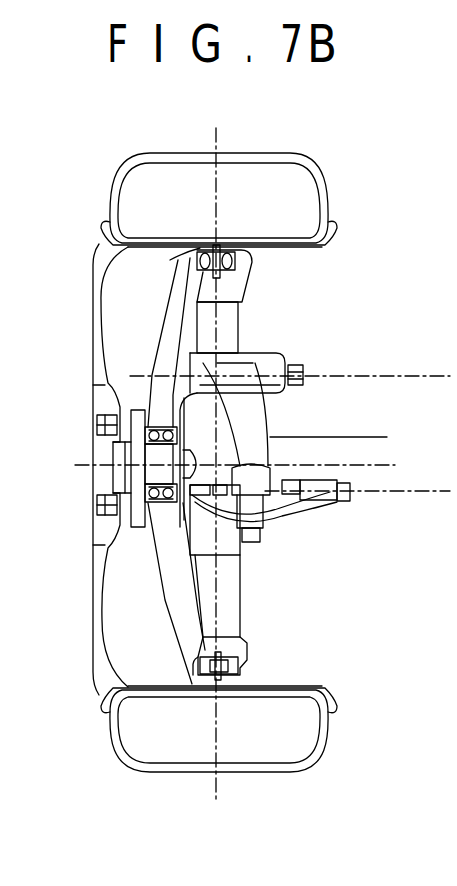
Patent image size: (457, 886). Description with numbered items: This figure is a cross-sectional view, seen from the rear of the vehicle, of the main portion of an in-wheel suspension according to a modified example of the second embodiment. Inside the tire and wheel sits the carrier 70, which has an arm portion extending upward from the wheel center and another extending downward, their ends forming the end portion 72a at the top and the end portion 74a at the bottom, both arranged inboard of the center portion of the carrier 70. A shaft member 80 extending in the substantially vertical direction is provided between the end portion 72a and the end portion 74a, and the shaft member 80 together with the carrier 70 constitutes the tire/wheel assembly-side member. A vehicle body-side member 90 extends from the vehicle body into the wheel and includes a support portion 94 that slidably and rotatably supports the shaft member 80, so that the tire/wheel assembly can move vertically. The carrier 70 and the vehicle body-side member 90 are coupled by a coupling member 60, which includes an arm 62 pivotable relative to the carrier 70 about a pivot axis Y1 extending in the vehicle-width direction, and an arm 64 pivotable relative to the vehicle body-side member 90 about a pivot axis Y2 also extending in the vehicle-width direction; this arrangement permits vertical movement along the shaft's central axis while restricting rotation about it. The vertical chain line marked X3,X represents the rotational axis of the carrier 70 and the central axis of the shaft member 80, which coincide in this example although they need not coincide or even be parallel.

The coupling member 60 is at (282, 457).
The arm 62 is at (247, 410).
The arm 64 is at (307, 513).
The carrier 70 is at (163, 567).
The end portion of the arm portion 72a is at (185, 266).
The end portion of the arm portion 74a is at (200, 677).
The shaft member 80 is at (226, 332).
The vehicle body-side member 90 is at (381, 443).
The support portion 94 is at (234, 548).
The pivot axis Y1 is at (364, 376).
The pivot axis Y2 is at (405, 491).
The rotational axis of the carrier and central axis of the shaft member X3,X is at (219, 793).